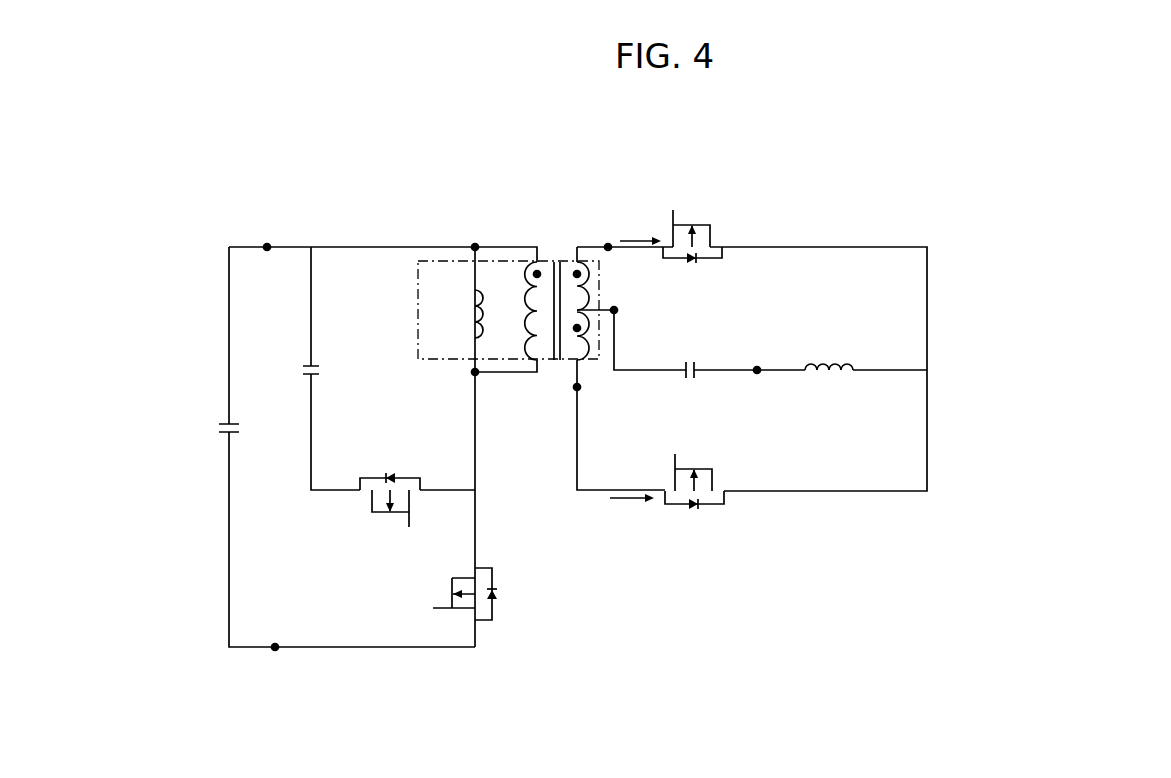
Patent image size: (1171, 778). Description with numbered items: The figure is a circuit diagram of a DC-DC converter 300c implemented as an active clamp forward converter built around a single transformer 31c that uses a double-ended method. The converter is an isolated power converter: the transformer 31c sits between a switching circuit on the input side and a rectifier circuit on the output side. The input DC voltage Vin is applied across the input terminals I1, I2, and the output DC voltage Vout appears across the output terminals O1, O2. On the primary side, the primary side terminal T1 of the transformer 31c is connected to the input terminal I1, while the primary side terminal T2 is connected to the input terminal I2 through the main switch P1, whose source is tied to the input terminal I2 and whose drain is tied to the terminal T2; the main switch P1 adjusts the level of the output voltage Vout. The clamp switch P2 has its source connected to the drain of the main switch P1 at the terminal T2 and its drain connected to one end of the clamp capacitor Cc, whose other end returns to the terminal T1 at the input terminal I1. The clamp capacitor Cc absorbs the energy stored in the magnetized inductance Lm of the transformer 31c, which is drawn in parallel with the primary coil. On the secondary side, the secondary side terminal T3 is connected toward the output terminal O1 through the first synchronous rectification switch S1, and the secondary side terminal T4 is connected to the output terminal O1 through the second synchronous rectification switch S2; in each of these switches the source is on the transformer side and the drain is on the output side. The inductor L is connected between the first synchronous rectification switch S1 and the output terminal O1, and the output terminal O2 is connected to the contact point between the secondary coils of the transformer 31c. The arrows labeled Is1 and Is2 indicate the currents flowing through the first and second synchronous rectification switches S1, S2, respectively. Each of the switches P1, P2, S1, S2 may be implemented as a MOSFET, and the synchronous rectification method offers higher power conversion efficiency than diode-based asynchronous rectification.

The DC-DC converter 300c is at (1160, 131).
The transformer 31c is at (531, 261).
The magnetized inductance Lm is at (458, 314).
The clamp capacitor Cc is at (329, 371).
The input DC voltage Vin is at (209, 425).
The output DC voltage Vout is at (681, 355).
The inductor L is at (829, 351).
The first synchronous rectification switch S1 is at (692, 222).
The second synchronous rectification switch S2 is at (694, 469).
The main switch P1 is at (448, 594).
The clamp switch P2 is at (390, 511).
The first secondary current Is1 is at (640, 230).
The second secondary current Is2 is at (632, 512).
The input terminal I1 is at (266, 234).
The input terminal I2 is at (271, 662).
The primary side terminal T1 is at (473, 234).
The primary side terminal T2 is at (459, 386).
The secondary side terminal T3 is at (607, 233).
The secondary side terminal T4 is at (594, 398).
The output terminal O1 is at (772, 357).
The output terminal O2 is at (628, 303).